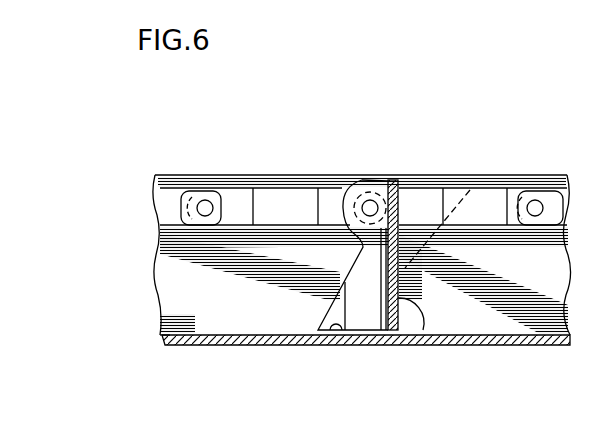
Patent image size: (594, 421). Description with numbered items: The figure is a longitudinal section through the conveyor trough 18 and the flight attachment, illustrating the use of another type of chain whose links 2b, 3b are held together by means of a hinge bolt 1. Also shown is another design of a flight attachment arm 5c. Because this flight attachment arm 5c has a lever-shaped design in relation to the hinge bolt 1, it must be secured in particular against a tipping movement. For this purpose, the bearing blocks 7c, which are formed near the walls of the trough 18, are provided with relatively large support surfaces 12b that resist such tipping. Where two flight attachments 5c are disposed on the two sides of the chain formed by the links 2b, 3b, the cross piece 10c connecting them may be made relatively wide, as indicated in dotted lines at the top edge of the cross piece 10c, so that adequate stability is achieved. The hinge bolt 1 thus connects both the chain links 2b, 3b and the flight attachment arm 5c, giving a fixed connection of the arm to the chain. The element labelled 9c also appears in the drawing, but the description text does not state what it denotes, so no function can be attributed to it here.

The hinge bolt 1 is at (369, 207).
The chain link 2b is at (492, 198).
The chain link 3b is at (293, 203).
The cross piece 10c is at (470, 190).
The trough 18 is at (165, 310).
The bearing block 7c is at (360, 298).
The support surface 12b is at (343, 333).
The post 9c is at (390, 332).
The flight attachment arm 5c is at (423, 331).